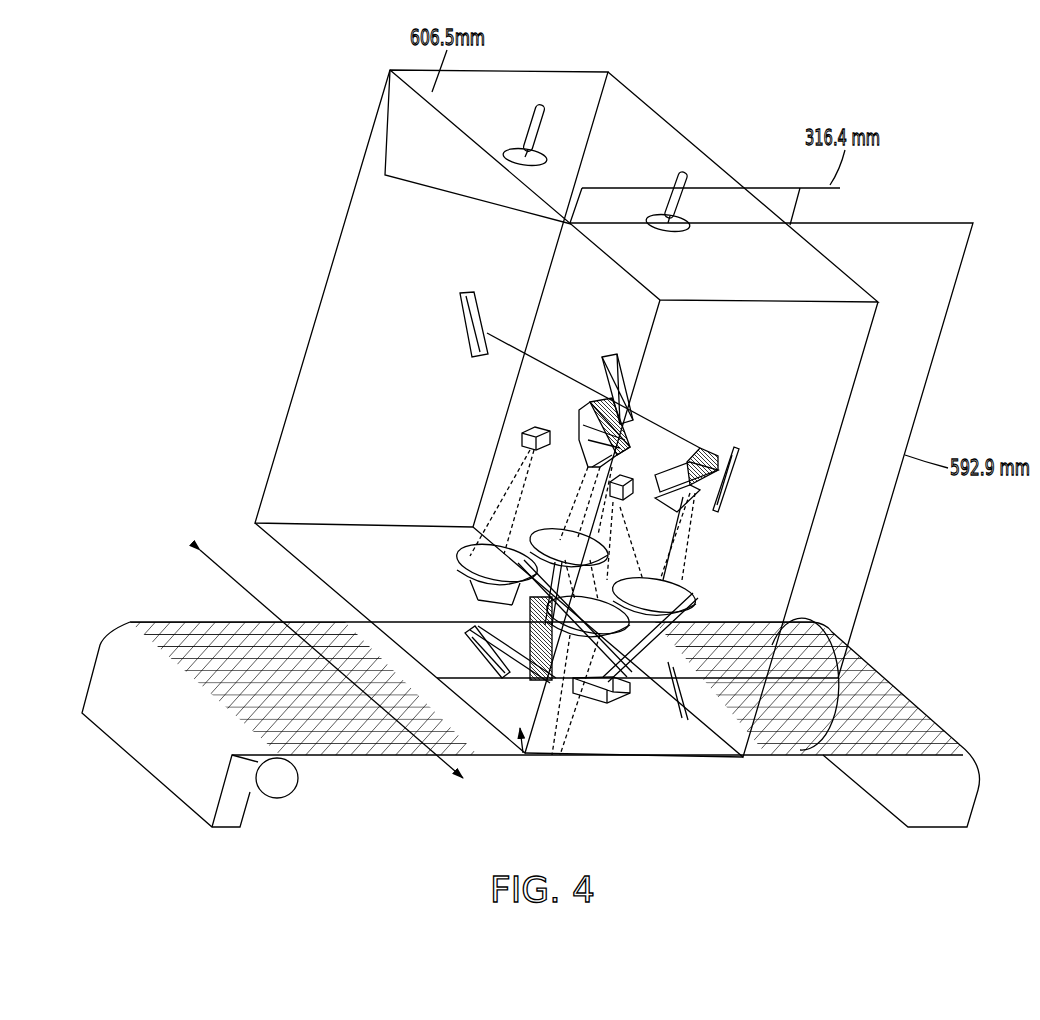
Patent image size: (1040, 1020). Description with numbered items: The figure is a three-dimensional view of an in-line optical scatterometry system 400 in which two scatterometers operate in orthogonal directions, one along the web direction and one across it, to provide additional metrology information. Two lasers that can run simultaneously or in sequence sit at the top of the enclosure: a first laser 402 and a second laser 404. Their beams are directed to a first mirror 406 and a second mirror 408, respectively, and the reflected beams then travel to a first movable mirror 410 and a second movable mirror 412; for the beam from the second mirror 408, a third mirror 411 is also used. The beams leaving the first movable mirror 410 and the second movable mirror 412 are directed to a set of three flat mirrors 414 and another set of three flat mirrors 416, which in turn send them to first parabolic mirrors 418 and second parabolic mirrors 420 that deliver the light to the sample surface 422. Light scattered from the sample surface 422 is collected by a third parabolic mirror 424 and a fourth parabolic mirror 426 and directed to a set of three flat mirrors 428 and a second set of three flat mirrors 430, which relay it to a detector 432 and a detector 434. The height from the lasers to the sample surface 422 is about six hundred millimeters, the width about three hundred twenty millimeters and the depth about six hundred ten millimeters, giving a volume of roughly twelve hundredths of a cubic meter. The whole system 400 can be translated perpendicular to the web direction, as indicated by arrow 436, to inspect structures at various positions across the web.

The system 400 is at (235, 163).
The first laser 402 is at (542, 97).
The second laser 404 is at (685, 165).
The first mirror 406 is at (460, 322).
The second mirror 408 is at (612, 357).
The first movable mirror 410 is at (583, 420).
The third mirror 411 is at (742, 473).
The second movable mirror 412 is at (688, 450).
The set of three flat mirrors 414 is at (568, 537).
The set of three flat mirrors 416 is at (665, 653).
The first parabolic mirrors 418 is at (550, 683).
The second parabolic mirrors 420 is at (690, 590).
The sample surface 422 is at (523, 753).
The third parabolic mirror 424 is at (612, 683).
The fourth parabolic mirror 426 is at (457, 633).
The set of three flat mirrors 428 is at (562, 675).
The second set of three flat mirrors 430 is at (453, 568).
The detector 432 is at (518, 438).
The detector 434 is at (631, 473).
The arrow 436 is at (443, 763).